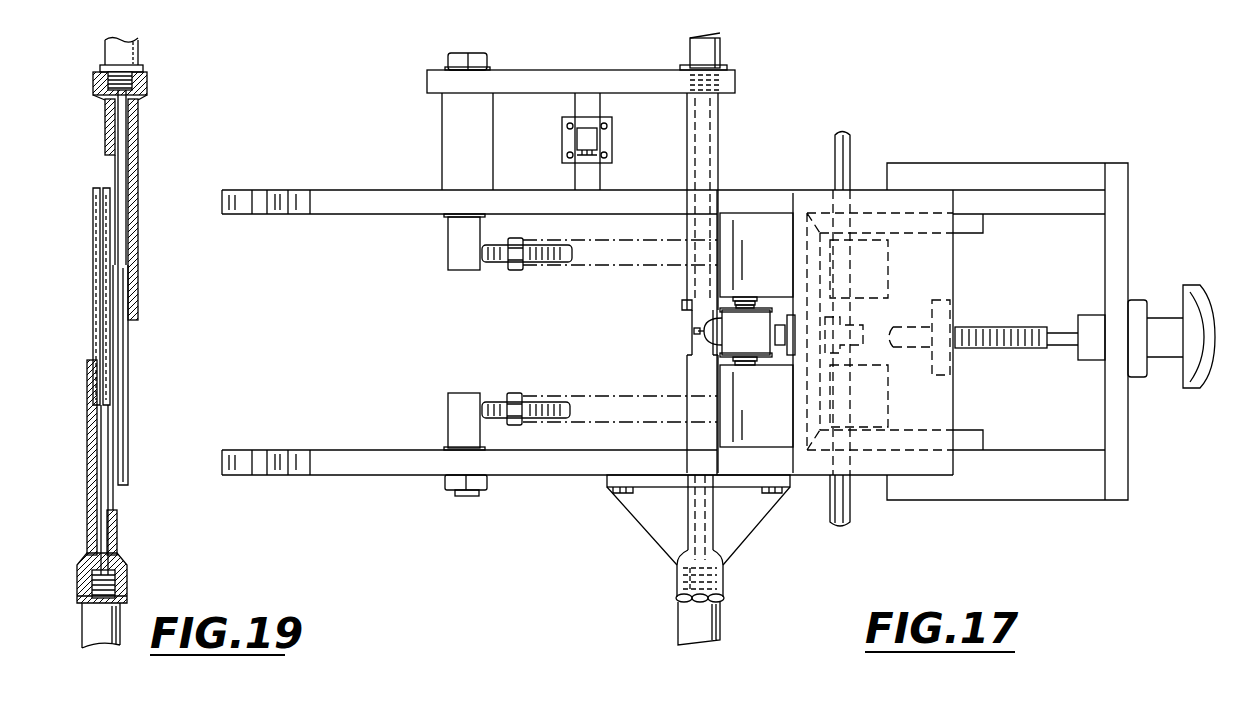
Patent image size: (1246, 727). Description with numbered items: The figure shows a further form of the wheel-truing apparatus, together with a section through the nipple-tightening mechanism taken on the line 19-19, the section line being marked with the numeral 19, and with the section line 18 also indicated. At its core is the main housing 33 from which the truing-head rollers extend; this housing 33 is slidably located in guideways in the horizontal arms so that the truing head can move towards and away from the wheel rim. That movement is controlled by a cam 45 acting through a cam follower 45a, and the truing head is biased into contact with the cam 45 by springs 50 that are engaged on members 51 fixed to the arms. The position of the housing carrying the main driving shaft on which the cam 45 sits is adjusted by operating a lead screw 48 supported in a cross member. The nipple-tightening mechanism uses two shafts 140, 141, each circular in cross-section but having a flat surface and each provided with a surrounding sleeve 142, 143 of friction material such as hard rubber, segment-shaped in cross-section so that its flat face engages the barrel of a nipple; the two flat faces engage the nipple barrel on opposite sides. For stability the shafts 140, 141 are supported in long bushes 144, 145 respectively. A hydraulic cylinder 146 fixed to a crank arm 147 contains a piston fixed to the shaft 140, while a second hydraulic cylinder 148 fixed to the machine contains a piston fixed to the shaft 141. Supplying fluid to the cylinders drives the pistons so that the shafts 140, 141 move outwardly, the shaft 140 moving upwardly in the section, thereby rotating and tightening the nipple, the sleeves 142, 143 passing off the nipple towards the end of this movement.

In FIG. 17, the main housing 33 is at (775, 274).
In FIG. 17, the cam 45 is at (850, 342).
In FIG. 17, the cam follower 45a is at (790, 363).
In FIG. 17, the lead screw 48 is at (1015, 290).
In FIG. 17, the springs 50 is at (548, 260).
In FIG. 17, the members 51 is at (458, 253).
In FIG. 19, the shaft 140 is at (121, 128).
In FIG. 19, the shaft 141 is at (104, 496).
In FIG. 19, the sleeve 142 is at (125, 433).
In FIG. 17, the sleeve 142 is at (703, 382).
In FIG. 19, the sleeve 143 is at (100, 298).
In FIG. 19, the long bush 144 is at (134, 157).
In FIG. 19, the long bush 145 is at (92, 452).
In FIG. 17, the long bush 145 is at (715, 580).
In FIG. 17, the hydraulic cylinder 146 is at (723, 52).
In FIG. 17, the crank arm 147 is at (547, 78).
In FIG. 17, the hydraulic cylinder 148 is at (707, 620).
In FIG. 19, the slot 18 is at (264, 337).
In FIG. 17, the slot 18 is at (1245, 333).
In FIG. 17, the axle 19 is at (730, 7).